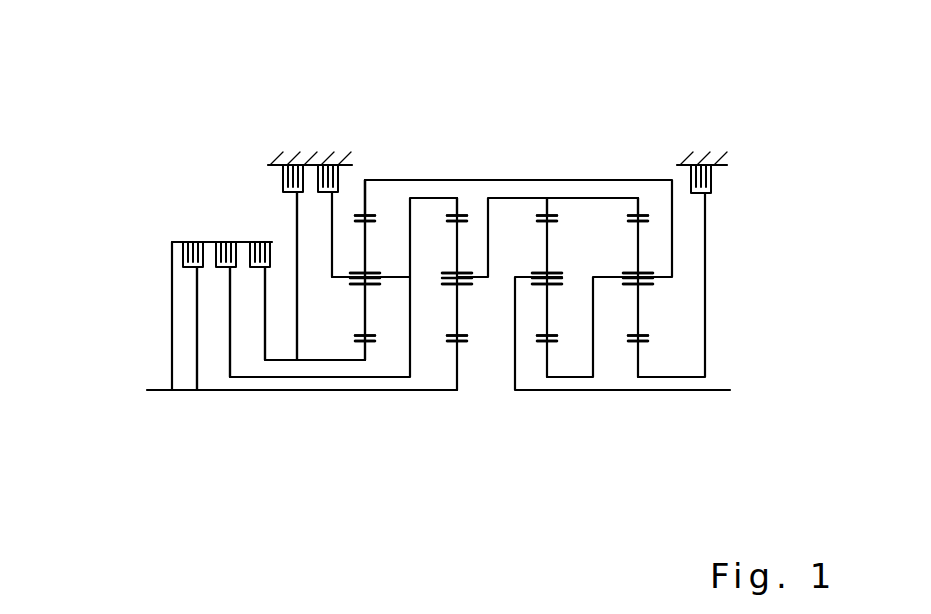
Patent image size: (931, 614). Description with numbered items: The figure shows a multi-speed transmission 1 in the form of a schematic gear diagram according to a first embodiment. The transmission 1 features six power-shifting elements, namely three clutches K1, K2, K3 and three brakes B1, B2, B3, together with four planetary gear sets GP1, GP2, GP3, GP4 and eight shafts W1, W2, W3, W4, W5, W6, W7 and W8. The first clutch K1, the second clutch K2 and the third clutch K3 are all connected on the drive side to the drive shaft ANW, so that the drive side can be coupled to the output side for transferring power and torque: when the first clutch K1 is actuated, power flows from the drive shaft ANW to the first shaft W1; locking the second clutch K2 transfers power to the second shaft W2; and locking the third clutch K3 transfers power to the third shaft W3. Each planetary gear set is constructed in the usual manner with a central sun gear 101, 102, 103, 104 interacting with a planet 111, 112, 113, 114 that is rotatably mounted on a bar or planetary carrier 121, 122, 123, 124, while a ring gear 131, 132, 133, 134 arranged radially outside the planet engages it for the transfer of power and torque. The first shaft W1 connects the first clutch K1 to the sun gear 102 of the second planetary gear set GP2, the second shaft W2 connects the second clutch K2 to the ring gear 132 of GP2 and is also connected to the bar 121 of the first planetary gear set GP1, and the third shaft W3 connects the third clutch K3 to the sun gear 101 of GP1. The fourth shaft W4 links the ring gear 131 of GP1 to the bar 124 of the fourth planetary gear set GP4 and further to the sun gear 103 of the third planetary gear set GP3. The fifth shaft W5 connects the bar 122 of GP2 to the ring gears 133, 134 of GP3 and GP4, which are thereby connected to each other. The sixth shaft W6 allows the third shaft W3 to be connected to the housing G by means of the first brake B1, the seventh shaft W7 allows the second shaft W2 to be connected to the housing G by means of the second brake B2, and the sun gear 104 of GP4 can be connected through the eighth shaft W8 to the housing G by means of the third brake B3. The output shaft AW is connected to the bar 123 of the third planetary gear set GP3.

The multi-speed transmission 1 is at (167, 134).
The first clutch K1 is at (187, 241).
The second clutch K2 is at (218, 241).
The third clutch K3 is at (255, 241).
The first brake B1 is at (287, 237).
The second brake B2 is at (337, 162).
The third brake B3 is at (714, 182).
The housing G is at (308, 150).
The drive shaft ANW is at (150, 392).
The output shaft AW is at (695, 392).
The first shaft W1 is at (203, 392).
The second shaft W2 is at (245, 380).
The third shaft W3 is at (297, 336).
The fourth shaft W4 is at (550, 179).
The fifth shaft W5 is at (624, 196).
The sixth shaft W6 is at (282, 362).
The seventh shaft W7 is at (366, 180).
The eighth shaft W8 is at (708, 240).
The first planetary gear set GP1 is at (365, 393).
The second planetary gear set GP2 is at (457, 393).
The third planetary gear set GP3 is at (547, 393).
The fourth planetary gear set GP4 is at (638, 393).
The sun gear 101 is at (347, 364).
The sun gear 102 is at (455, 368).
The sun gear 103 is at (547, 358).
The sun gear 104 is at (641, 358).
The planet 111 is at (361, 310).
The planet 112 is at (455, 312).
The planet 113 is at (547, 318).
The planet 114 is at (641, 310).
The bar 121 is at (388, 274).
The bar 122 is at (480, 276).
The bar 123 is at (521, 279).
The bar 124 is at (676, 284).
The ring gear 131 is at (368, 195).
The ring gear 132 is at (458, 200).
The ring gear 133 is at (551, 205).
The ring gear 134 is at (641, 209).